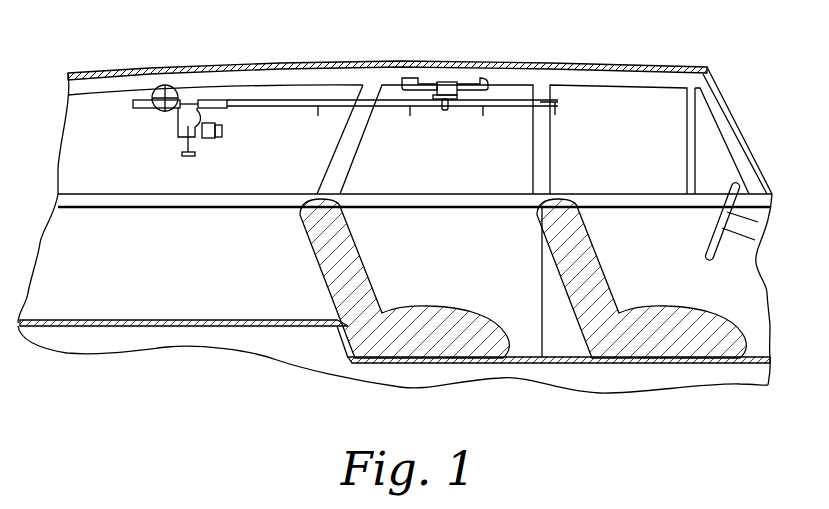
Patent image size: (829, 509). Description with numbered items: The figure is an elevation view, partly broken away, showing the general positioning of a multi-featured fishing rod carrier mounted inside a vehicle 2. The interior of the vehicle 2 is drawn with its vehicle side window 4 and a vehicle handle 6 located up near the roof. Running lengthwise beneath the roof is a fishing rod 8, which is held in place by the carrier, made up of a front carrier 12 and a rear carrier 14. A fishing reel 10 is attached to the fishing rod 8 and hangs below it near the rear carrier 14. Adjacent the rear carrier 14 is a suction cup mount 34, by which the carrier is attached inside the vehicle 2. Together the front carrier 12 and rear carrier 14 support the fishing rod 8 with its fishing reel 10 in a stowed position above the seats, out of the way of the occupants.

The vehicle 2 is at (647, 80).
The vehicle side window 4 is at (93, 105).
The vehicle handle 6 is at (483, 80).
The fishing rod 8 is at (302, 107).
The fishing reel 10 is at (200, 128).
The front carrier 12 is at (443, 100).
The rear carrier 14 is at (157, 88).
The suction cup mount 34 is at (168, 88).